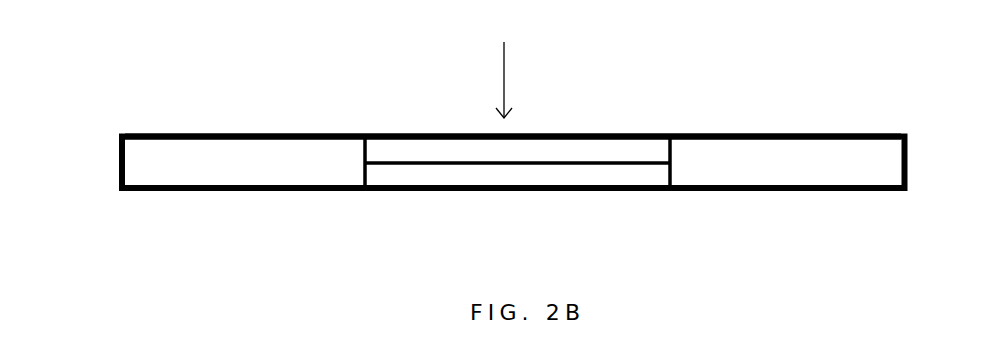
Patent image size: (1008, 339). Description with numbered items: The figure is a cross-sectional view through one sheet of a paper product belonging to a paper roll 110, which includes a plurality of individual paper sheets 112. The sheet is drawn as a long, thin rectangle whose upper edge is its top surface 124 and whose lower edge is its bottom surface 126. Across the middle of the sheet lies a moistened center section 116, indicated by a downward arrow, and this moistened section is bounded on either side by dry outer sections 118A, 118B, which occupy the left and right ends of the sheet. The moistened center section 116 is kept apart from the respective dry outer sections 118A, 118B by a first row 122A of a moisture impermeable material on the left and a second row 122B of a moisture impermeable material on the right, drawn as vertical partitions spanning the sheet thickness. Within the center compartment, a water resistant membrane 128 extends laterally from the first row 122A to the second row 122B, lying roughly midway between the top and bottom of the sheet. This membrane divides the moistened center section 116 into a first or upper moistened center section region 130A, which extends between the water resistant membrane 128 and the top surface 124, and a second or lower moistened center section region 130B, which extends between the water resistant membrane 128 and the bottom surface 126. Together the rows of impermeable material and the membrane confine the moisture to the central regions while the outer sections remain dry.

The paper roll 110 is at (466, 136).
The paper sheet 112 is at (119, 155).
The moistened center section 116 is at (504, 67).
The dry outer section 118A is at (275, 169).
The dry outer section 118B is at (796, 166).
The first row of moisture impermeable material 122A is at (363, 150).
The second row of moisture impermeable material 122B is at (673, 150).
The top surface 124 is at (160, 134).
The bottom surface 126 is at (170, 190).
The water resistant membrane 128 is at (450, 162).
The upper moistened center section region 130A is at (540, 150).
The lower moistened center section region 130B is at (475, 177).